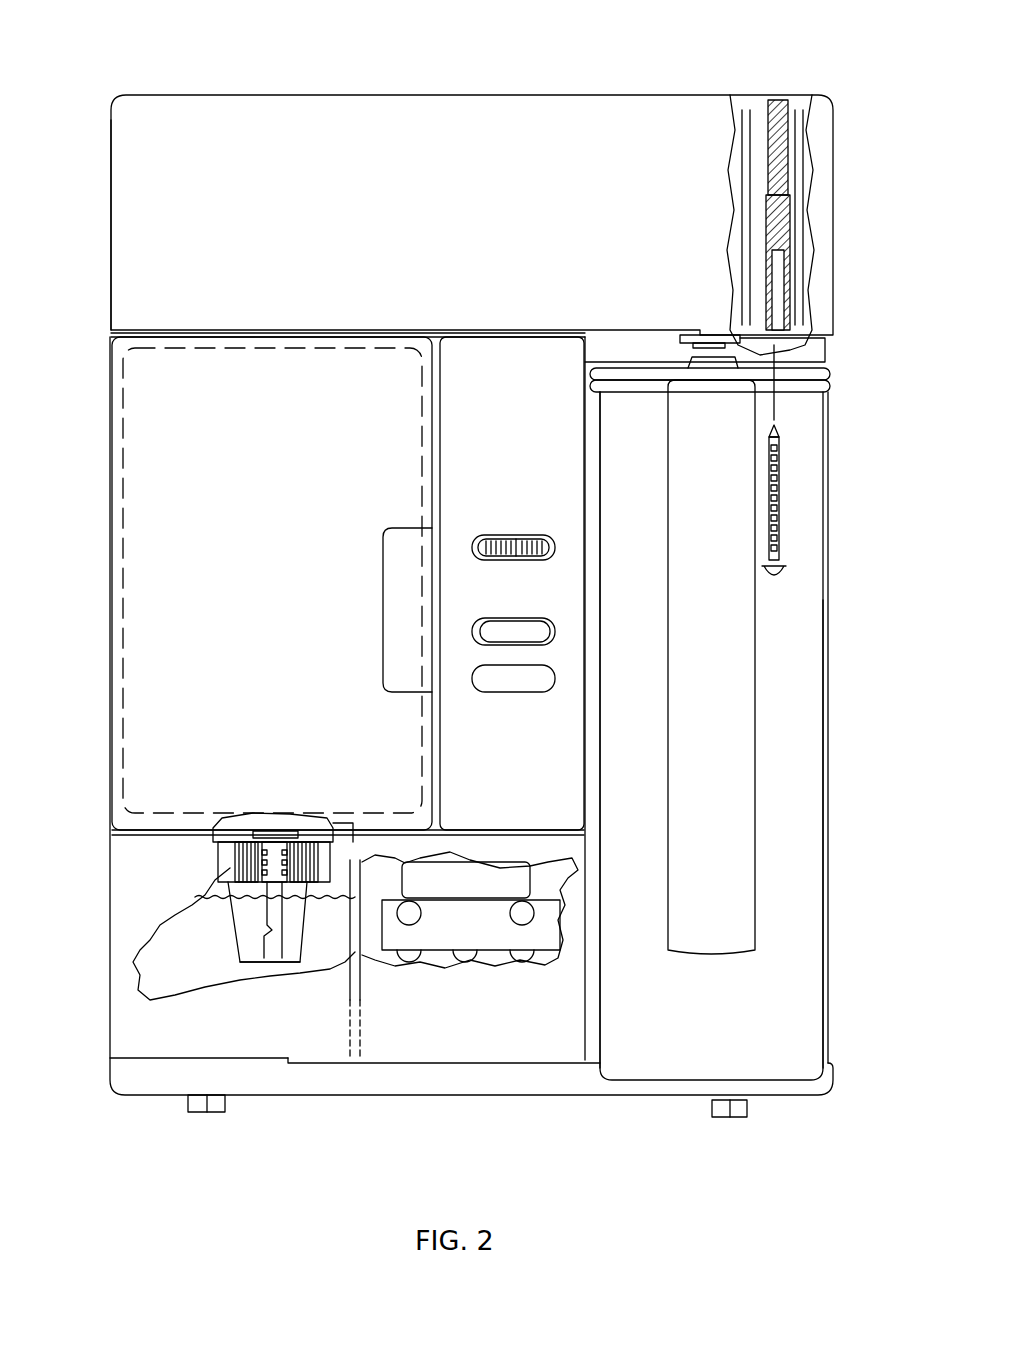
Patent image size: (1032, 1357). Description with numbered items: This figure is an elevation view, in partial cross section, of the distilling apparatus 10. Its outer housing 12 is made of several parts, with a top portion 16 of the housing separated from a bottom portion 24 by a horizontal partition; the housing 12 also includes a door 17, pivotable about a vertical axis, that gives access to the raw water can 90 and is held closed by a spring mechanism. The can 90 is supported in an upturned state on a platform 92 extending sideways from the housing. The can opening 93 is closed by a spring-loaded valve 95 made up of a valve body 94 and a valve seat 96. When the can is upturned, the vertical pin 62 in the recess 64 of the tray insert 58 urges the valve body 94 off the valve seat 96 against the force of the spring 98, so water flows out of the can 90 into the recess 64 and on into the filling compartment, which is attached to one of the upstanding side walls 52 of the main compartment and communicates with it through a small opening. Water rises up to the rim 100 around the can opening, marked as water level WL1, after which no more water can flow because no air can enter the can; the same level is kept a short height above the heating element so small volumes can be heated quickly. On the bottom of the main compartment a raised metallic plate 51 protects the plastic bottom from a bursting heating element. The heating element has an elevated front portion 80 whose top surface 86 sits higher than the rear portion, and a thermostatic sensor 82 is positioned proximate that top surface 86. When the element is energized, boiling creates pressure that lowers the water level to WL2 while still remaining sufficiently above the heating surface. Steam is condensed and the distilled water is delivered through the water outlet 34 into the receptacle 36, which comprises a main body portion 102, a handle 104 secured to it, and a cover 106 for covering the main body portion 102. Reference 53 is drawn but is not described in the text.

The distilling apparatus 10 is at (662, 1156).
The outer housing 12 is at (830, 627).
The top portion of the housing 16 is at (110, 232).
The door 17 is at (428, 498).
The bottom portion of the housing 24 is at (306, 92).
The water outlet 34 is at (700, 340).
The receptacle 36 is at (808, 1010).
The raised metallic plate 51 is at (438, 952).
The upstanding side wall 52 is at (345, 962).
The port 53 is at (493, 952).
The tray insert 58 is at (243, 975).
The vertical pin 62 is at (273, 952).
The recess 64 is at (245, 950).
The second or front portion of the heating element 80 is at (510, 913).
The thermostatic control means or sensor 82 is at (479, 897).
The top surface of the second or forward portion 86 is at (620, 898).
The raw water can 90 is at (143, 556).
The platform 92 is at (143, 820).
The can opening 93 is at (242, 828).
The valve body 94 is at (275, 850).
The spring-loaded valve 95 is at (285, 830).
The valve seat 96 is at (305, 840).
The spring 98 is at (263, 882).
The rim 100 is at (200, 876).
The main body portion 102 is at (810, 712).
The handle 104 is at (755, 800).
The cover 106 is at (832, 378).
The water level WL1 is at (330, 890).
The lowered water level WL2 is at (547, 880).